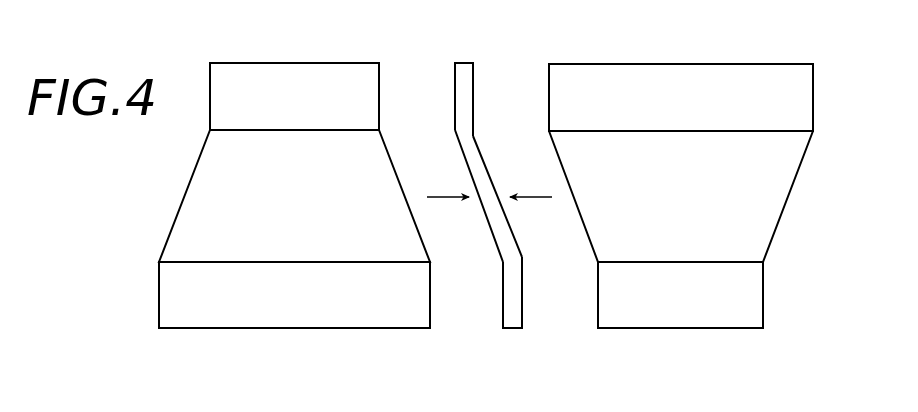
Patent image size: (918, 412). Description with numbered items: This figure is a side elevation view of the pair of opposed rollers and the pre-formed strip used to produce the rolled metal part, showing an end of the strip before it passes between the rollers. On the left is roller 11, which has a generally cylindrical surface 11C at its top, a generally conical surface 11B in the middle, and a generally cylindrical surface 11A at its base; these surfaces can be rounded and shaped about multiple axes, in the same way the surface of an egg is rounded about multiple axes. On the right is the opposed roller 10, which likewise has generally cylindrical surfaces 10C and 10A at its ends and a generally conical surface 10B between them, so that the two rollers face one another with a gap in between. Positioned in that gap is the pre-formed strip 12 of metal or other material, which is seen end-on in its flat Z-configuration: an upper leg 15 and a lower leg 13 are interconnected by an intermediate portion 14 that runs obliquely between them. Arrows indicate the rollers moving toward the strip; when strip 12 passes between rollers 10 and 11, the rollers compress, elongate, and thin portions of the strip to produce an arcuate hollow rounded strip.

The roller 10 is at (681, 219).
The cylindrical surface 10A is at (680, 295).
The conical surface 10B is at (681, 196).
The cylindrical surface 10C is at (681, 97).
The roller 11 is at (276, 216).
The cylindrical surface 11A is at (294, 295).
The conical surface 11B is at (294, 196).
The cylindrical surface 11C is at (294, 96).
The pre-formed strip 12 is at (426, 194).
The leg 13 is at (518, 335).
The intermediate portion 14 is at (455, 155).
The leg 15 is at (474, 66).